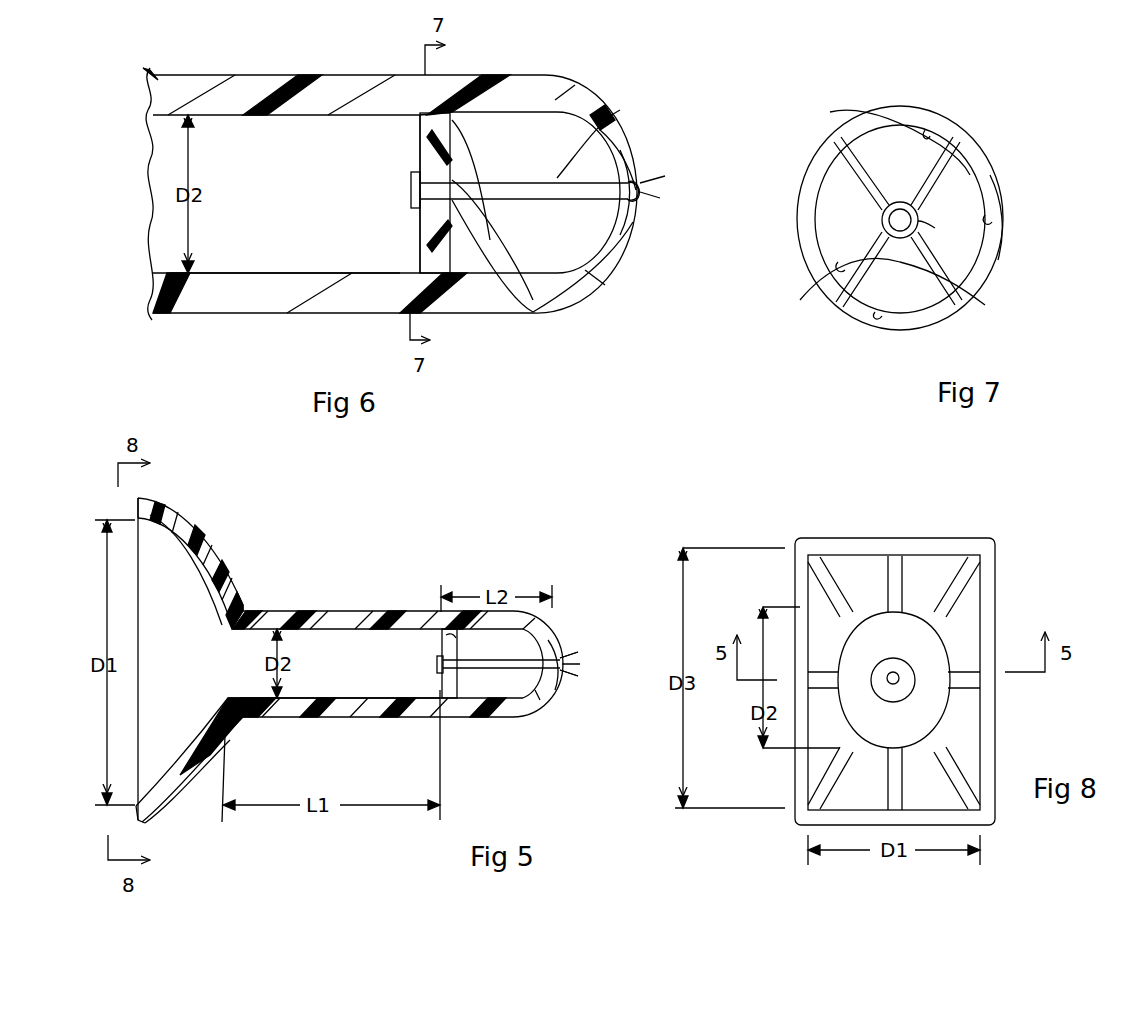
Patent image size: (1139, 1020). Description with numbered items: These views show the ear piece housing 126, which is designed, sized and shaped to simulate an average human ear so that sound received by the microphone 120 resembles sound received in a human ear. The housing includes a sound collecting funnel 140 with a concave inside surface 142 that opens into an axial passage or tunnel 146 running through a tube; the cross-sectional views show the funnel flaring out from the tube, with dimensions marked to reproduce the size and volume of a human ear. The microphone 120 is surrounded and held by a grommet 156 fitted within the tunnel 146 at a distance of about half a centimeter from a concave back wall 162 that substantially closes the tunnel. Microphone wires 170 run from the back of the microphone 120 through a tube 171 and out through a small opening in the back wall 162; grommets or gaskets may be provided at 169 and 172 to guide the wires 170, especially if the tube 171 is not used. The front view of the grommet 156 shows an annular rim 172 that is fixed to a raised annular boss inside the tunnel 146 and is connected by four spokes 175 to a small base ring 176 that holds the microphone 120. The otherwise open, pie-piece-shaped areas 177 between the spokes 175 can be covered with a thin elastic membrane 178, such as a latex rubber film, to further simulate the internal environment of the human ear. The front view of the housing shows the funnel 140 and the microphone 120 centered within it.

In FIG. 6, the microphone 120 is at (413, 178).
In FIG. 7, the microphone 120 is at (905, 216).
In FIG. 5, the microphone 120 is at (438, 660).
In FIG. 8, the microphone 120 is at (897, 680).
In FIG. 6, the ear piece housing 126 is at (548, 72).
In FIG. 5, the ear piece housing 126 is at (450, 578).
In FIG. 5, the sound collecting funnel 140 is at (195, 528).
In FIG. 8, the sound collecting funnel 140 is at (985, 562).
In FIG. 5, the concave inside surface 142 is at (206, 572).
In FIG. 8, the concave inside surface 142 is at (862, 573).
In FIG. 6, the axial passage or tunnel 146 is at (220, 273).
In FIG. 5, the axial passage or tunnel 146 is at (336, 698).
In FIG. 6, the grommet 156 is at (440, 225).
In FIG. 7, the grommet 156 is at (958, 130).
In FIG. 5, the grommet 156 is at (450, 685).
In FIG. 8, the grommet 156 is at (905, 672).
In FIG. 6, the concave back wall 162 is at (625, 152).
In FIG. 5, the concave back wall 162 is at (540, 650).
In FIG. 6, the grommet or gasket 169 is at (450, 200).
In FIG. 6, the microphone wires 170 is at (657, 210).
In FIG. 5, the microphone wires 170 is at (570, 690).
In FIG. 6, the tube 171 is at (557, 178).
In FIG. 6, the annular rim 172 is at (634, 212).
In FIG. 7, the annular rim 172 is at (1000, 172).
In FIG. 7, the spokes 175 is at (930, 150).
In FIG. 7, the small base ring 176 is at (918, 230).
In FIG. 7, the pie-piece-shaped areas 177 is at (928, 128).
In FIG. 7, the thin elastic membrane 178 is at (900, 216).